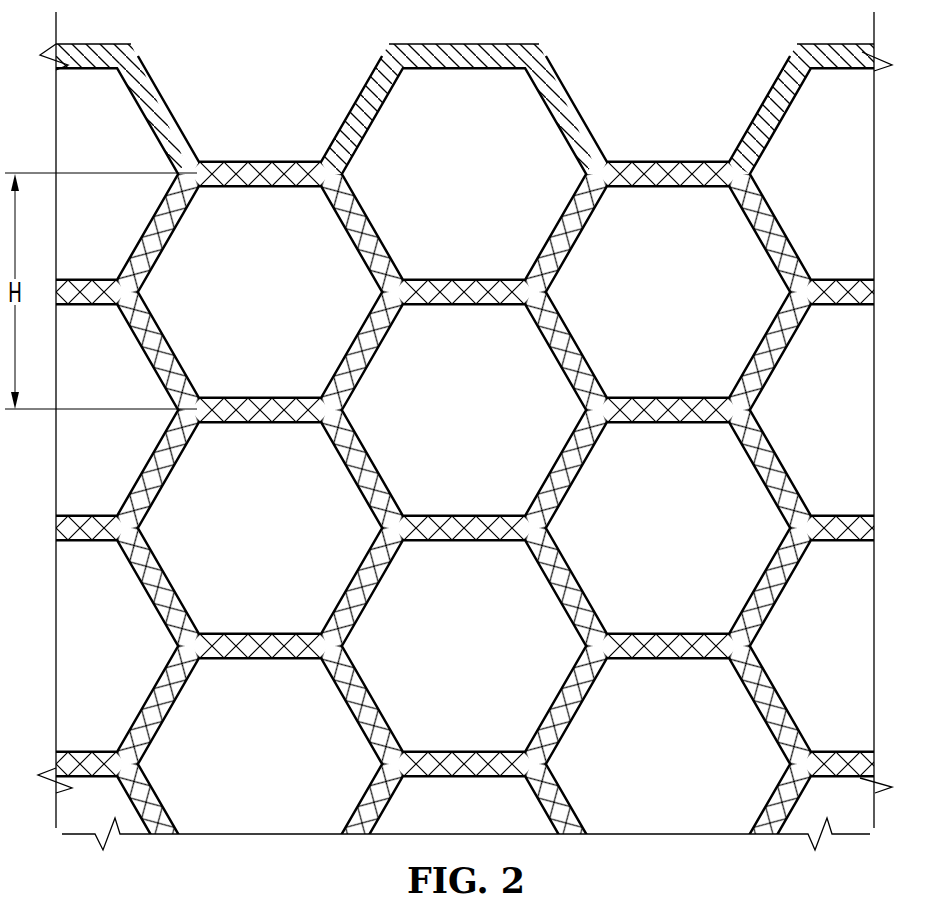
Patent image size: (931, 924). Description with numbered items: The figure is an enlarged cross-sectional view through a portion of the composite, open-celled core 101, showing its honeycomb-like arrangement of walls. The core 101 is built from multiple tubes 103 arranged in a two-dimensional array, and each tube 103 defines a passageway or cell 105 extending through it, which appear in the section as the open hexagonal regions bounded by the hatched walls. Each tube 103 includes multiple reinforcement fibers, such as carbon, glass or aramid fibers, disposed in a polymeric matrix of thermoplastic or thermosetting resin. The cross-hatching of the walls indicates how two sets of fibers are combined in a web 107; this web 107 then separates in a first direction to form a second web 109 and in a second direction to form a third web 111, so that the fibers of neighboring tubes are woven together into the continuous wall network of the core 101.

The composite open-celled core 101 is at (465, 468).
The tube 103 is at (168, 585).
The cell 105 is at (175, 488).
The web 107 is at (247, 168).
The second web 109 is at (377, 80).
The third web 111 is at (367, 227).